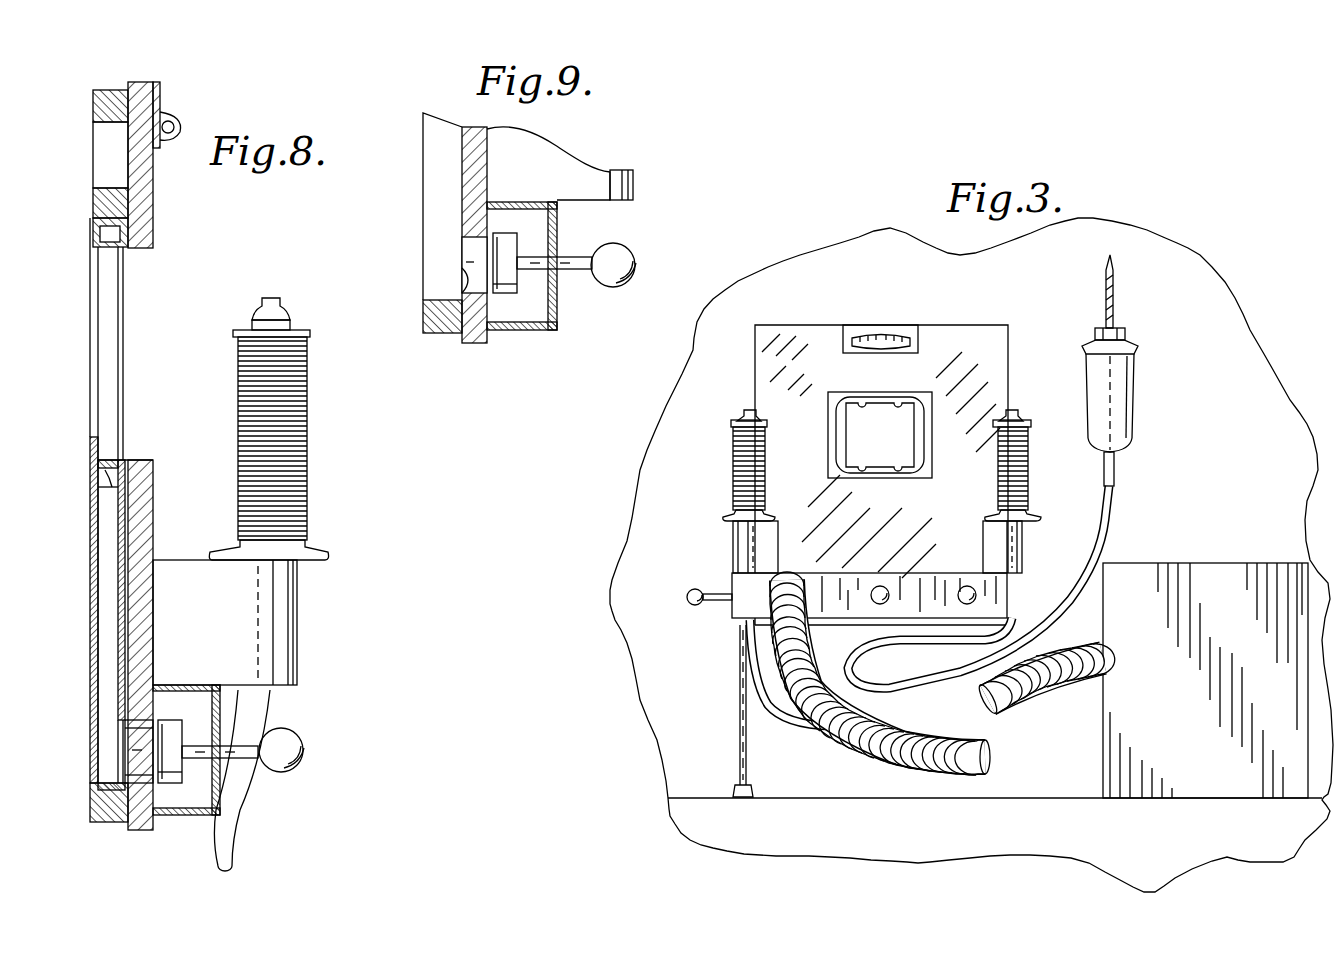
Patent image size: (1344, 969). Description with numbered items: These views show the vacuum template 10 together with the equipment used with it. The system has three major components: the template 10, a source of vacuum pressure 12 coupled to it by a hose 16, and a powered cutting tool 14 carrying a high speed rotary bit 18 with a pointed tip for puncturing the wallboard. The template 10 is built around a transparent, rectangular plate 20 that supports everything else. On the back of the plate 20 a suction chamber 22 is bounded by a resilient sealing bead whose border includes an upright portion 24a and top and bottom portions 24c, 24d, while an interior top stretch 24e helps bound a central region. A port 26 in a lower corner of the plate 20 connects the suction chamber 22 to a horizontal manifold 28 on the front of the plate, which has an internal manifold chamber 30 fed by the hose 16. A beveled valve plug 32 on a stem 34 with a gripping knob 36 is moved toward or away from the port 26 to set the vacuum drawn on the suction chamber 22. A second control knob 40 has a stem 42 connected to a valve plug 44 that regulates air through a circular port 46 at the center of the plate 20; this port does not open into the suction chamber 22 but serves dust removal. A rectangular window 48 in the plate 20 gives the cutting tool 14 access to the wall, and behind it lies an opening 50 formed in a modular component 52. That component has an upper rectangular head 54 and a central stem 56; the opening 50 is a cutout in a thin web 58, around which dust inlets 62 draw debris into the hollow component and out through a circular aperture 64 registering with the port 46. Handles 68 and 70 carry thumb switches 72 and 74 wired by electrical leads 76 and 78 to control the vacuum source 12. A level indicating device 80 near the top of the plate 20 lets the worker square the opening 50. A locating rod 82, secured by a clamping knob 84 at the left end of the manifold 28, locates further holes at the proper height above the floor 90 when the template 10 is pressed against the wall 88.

In FIG. 8, the template 10 is at (342, 487).
In FIG. 3, the template 10 is at (1002, 304).
In FIG. 3, the source of vacuum pressure 12 is at (1196, 570).
In FIG. 3, the powered cutting tool 14 is at (1150, 390).
In FIG. 3, the hose 16 is at (853, 737).
In FIG. 3, the rotary bit 18 is at (1114, 292).
In FIG. 8, the transparent rectangular plate 20 is at (144, 90).
In FIG. 9, the transparent rectangular plate 20 is at (498, 160).
In FIG. 3, the transparent rectangular plate 20 is at (822, 336).
In FIG. 8, the suction chamber 22 is at (96, 164).
In FIG. 9, the suction chamber 22 is at (430, 226).
In FIG. 9, the upright bead portion 24a is at (432, 188).
In FIG. 8, the top bead portion 24c is at (110, 96).
In FIG. 8, the bottom bead portion 24d is at (104, 812).
In FIG. 9, the bottom bead portion 24d is at (440, 328).
In FIG. 8, the top stretch 24e is at (100, 212).
In FIG. 9, the port 26 is at (470, 270).
In FIG. 8, the manifold 28 is at (172, 818).
In FIG. 9, the manifold 28 is at (515, 330).
In FIG. 3, the manifold 28 is at (910, 576).
In FIG. 8, the manifold chamber 30 is at (197, 702).
In FIG. 9, the manifold chamber 30 is at (534, 300).
In FIG. 9, the valve plug 32 is at (508, 234).
In FIG. 9, the stem 34 is at (565, 258).
In FIG. 9, the gripping knob 36 is at (618, 248).
In FIG. 3, the gripping knob 36 is at (976, 592).
In FIG. 8, the control knob 40 is at (290, 734).
In FIG. 3, the control knob 40 is at (880, 586).
In FIG. 8, the stem 42 is at (197, 760).
In FIG. 8, the valve plug 44 is at (172, 718).
In FIG. 8, the circular port 46 is at (134, 765).
In FIG. 3, the rectangular window 48 is at (942, 448).
In FIG. 8, the opening 50 is at (90, 318).
In FIG. 3, the opening 50 is at (872, 416).
In FIG. 8, the modular component 52 is at (84, 612).
In FIG. 8, the upper rectangular head 54 is at (96, 480).
In FIG. 8, the central stem 56 is at (92, 666).
In FIG. 8, the web 58 is at (96, 448).
In FIG. 8, the dust inlets 62 is at (112, 488).
In FIG. 8, the circular aperture 64 is at (116, 744).
In FIG. 3, the gripping handle 68 is at (740, 470).
In FIG. 8, the gripping handle 70 is at (292, 402).
In FIG. 3, the gripping handle 70 is at (1020, 466).
In FIG. 3, the thumb switch 72 is at (748, 411).
In FIG. 8, the thumb switch 74 is at (272, 296).
In FIG. 3, the thumb switch 74 is at (1012, 408).
In FIG. 3, the electrical lead 76 is at (772, 706).
In FIG. 8, the electrical lead 78 is at (232, 822).
In FIG. 3, the electrical lead 78 is at (893, 640).
In FIG. 8, the level indicating device 80 is at (176, 122).
In FIG. 3, the level indicating device 80 is at (890, 336).
In FIG. 3, the locating rod 82 is at (738, 694).
In FIG. 3, the clamping knob 84 is at (688, 591).
In FIG. 3, the wall 88 is at (662, 468).
In FIG. 3, the floor 90 is at (692, 796).